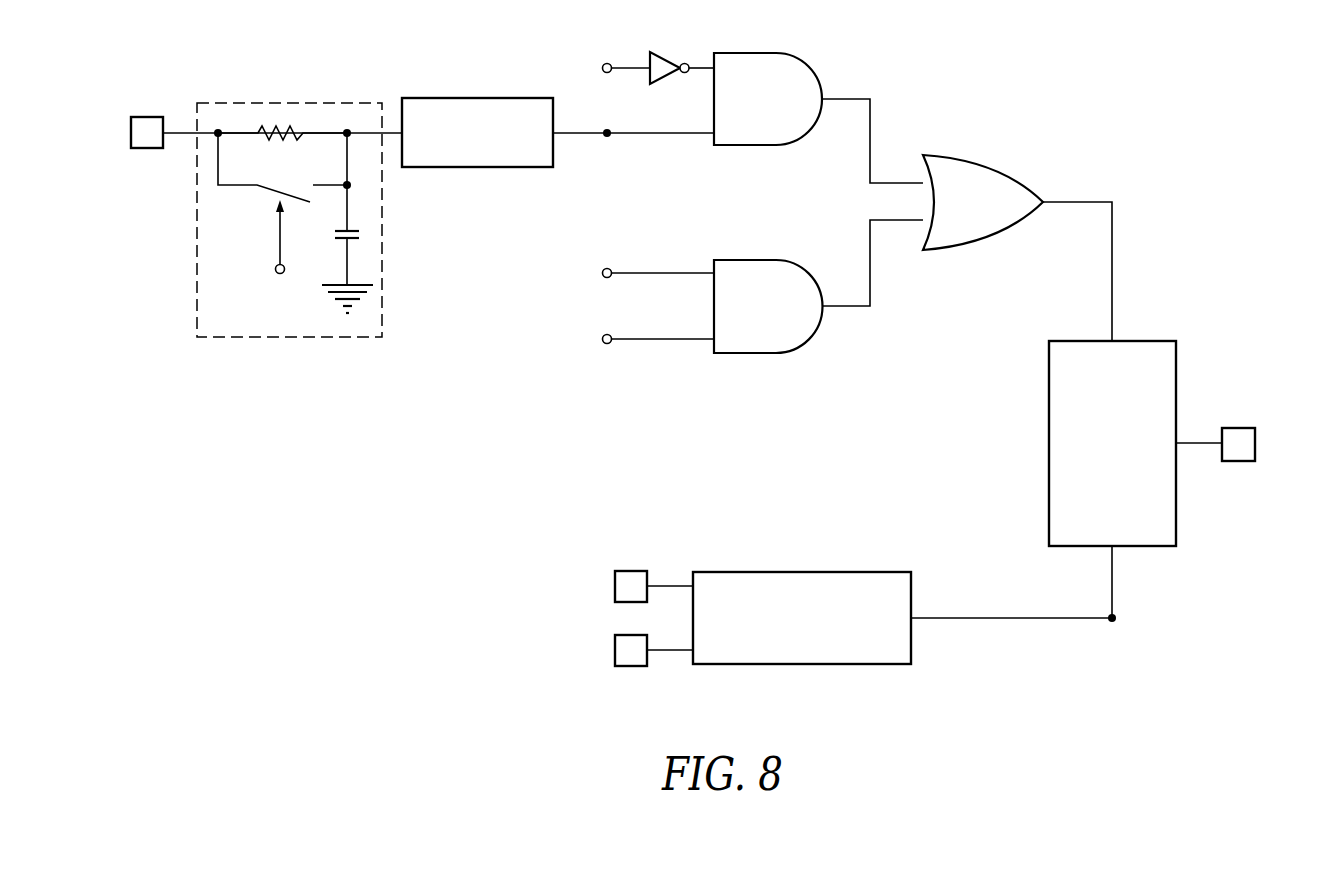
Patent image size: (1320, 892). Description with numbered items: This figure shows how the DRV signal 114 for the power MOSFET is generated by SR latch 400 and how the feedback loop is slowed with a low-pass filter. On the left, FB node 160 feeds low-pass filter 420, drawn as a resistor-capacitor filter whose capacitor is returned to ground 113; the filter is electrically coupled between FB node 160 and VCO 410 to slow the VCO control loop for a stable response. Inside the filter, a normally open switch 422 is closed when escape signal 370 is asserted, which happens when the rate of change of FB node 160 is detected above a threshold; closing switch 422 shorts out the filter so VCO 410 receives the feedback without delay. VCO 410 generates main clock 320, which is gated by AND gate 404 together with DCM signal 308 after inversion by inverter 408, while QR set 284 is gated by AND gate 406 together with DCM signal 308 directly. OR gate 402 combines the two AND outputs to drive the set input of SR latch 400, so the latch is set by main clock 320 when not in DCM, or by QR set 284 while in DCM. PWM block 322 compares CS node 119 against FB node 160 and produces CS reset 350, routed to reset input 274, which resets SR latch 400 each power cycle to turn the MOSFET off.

The ground 113 is at (363, 292).
The DRV signal 114 is at (1238, 428).
The CS node 119 is at (628, 571).
The FB node 160 is at (140, 117).
The reset input 274 is at (1118, 617).
The QR set 284 is at (607, 345).
The DCM signal 308 is at (607, 62).
The main clock 320 is at (611, 128).
The PWM block 322 is at (800, 572).
The CS reset 350 is at (1079, 638).
The escape signal 370 is at (277, 272).
The SR latch 400 is at (1175, 341).
The OR gate 402 is at (985, 155).
The AND gate 404 is at (775, 53).
The AND gate 406 is at (775, 260).
The inverter 408 is at (668, 52).
The VCO 410 is at (470, 168).
The low-pass filter 420 is at (326, 103).
The switch 422 is at (292, 197).